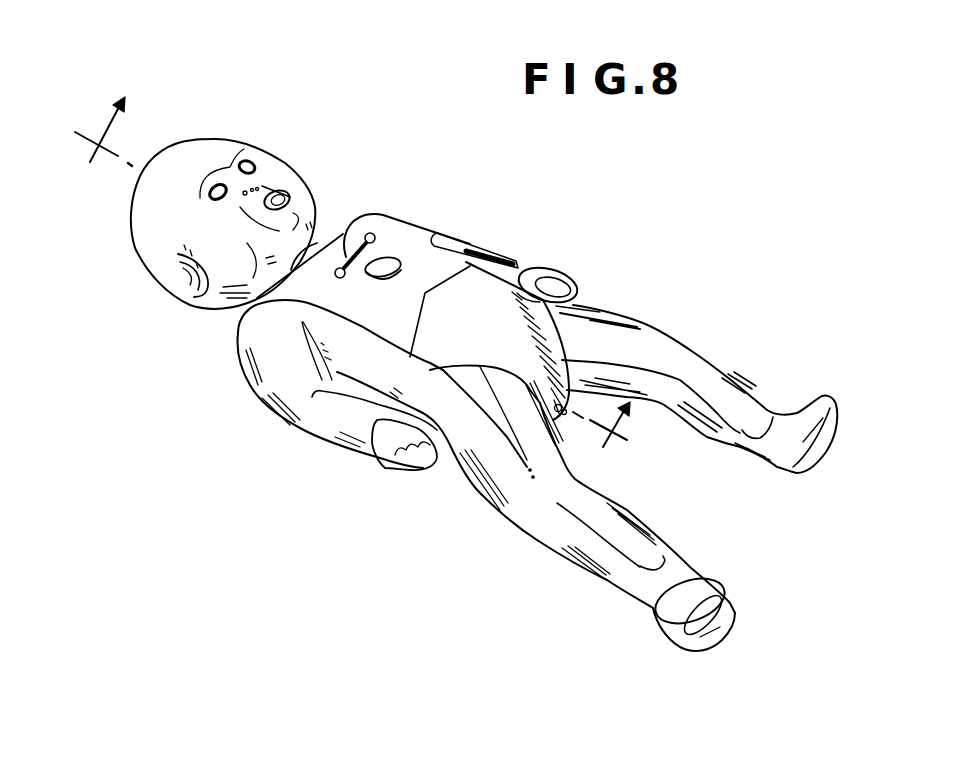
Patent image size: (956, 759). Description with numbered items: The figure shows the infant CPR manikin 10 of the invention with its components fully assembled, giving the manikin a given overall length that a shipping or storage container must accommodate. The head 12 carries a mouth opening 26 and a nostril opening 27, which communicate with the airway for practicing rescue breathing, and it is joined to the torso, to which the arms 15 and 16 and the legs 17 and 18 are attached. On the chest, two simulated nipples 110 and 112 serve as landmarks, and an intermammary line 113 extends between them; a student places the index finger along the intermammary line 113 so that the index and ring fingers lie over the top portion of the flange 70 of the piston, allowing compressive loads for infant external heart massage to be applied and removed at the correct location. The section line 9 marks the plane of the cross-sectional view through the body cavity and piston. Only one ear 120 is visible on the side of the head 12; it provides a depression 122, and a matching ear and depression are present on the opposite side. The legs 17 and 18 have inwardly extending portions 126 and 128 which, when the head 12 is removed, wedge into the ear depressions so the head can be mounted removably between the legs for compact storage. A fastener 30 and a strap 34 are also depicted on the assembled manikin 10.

The section line 9- 9 is at (359, 261).
The CPR manikin 10 is at (372, 130).
The head 12 is at (193, 140).
The arm 15 is at (513, 263).
The arm 16 is at (347, 457).
The leg 17 is at (722, 372).
The leg 18 is at (582, 577).
The mouth opening 26 is at (292, 192).
The nostril opening 27 is at (258, 186).
The fastener 30 is at (558, 415).
The strap 34 is at (435, 232).
The flange 70 is at (393, 262).
The simulated nipple 110 is at (372, 236).
The simulated nipple 112 is at (337, 275).
The intermammary line 113 is at (353, 227).
The ear 120 is at (195, 298).
The depression 122 is at (177, 268).
The inwardly extending portion of leg 126 is at (721, 427).
The inwardly extending portion of leg 128 is at (627, 510).